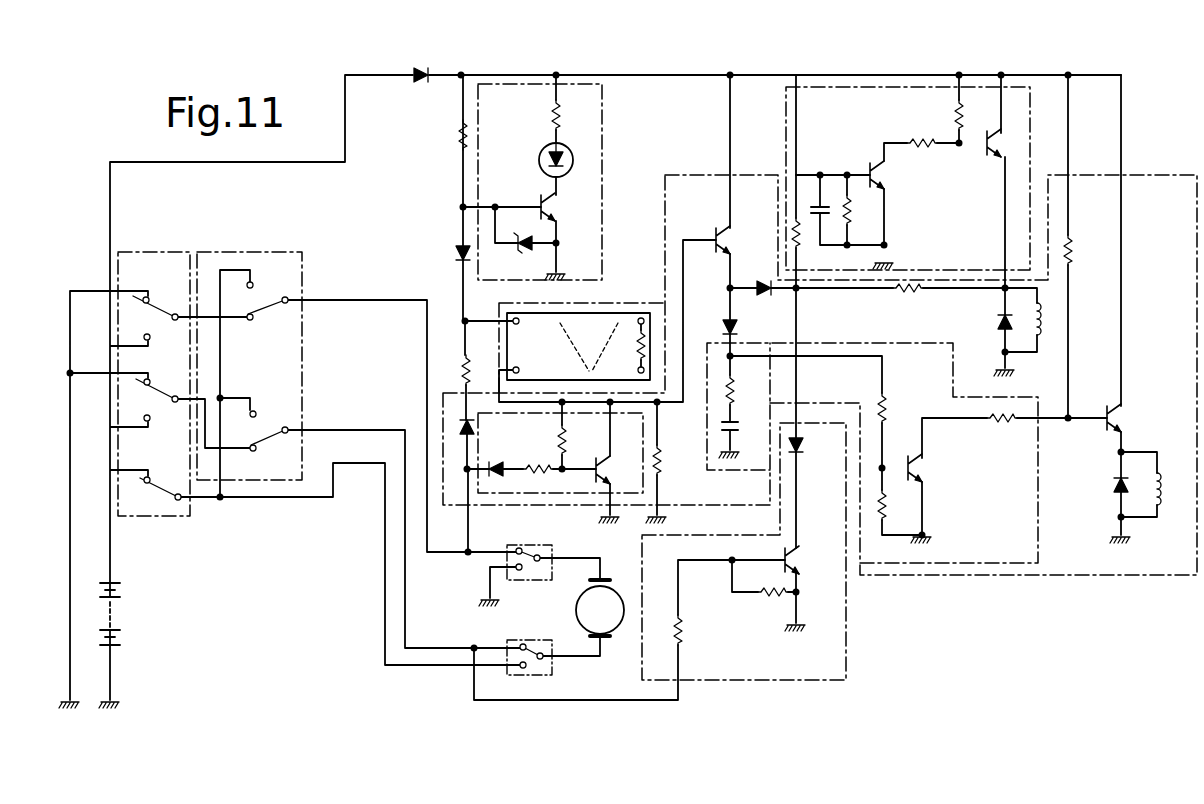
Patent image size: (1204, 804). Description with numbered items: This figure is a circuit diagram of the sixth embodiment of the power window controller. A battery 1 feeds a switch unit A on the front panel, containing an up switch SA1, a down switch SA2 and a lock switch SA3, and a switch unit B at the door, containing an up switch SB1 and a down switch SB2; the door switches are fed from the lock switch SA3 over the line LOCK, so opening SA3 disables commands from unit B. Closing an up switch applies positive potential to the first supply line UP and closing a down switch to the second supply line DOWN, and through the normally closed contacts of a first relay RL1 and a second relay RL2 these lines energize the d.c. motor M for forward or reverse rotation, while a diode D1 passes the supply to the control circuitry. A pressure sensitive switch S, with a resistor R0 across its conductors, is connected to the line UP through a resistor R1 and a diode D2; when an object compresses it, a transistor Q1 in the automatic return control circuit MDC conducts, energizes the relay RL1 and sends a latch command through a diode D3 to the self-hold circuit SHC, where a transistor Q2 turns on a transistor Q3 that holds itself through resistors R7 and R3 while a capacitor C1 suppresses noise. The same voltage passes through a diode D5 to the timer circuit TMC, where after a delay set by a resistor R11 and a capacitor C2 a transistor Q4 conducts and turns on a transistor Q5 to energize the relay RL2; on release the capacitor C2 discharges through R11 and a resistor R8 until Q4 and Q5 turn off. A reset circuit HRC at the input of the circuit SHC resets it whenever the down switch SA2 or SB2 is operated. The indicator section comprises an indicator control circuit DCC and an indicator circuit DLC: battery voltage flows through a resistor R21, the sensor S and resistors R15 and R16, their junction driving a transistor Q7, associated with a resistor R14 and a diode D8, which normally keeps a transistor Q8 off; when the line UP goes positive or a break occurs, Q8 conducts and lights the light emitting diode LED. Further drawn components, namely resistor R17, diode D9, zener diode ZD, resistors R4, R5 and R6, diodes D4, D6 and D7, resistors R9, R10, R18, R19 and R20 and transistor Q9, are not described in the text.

The battery 1 is at (124, 598).
The switch unit A is at (178, 252).
The switch unit B is at (290, 252).
The up switch SA1 is at (120, 333).
The down switch SA2 is at (144, 411).
The lock switch SA3 is at (165, 500).
The up switch SB1 is at (273, 318).
The down switch SB2 is at (275, 466).
The first supply line UP is at (329, 290).
The second supply line DOWN is at (338, 419).
The positive potential line LOCK is at (335, 507).
The diode D1 is at (426, 86).
The resistor R21 is at (444, 136).
The diode D9 is at (479, 261).
The indicator circuit DLC is at (603, 106).
The resistor R17 is at (575, 115).
The light emitting diode LED is at (576, 160).
The transistor Q8 is at (565, 209).
The zener diode ZD is at (528, 254).
The automatic return control circuit MDC is at (664, 194).
The self-hold circuit SHC is at (790, 106).
The pressure sensitive switch S is at (628, 302).
The resistor R0 is at (648, 350).
The resistor R1 is at (481, 370).
The diode D2 is at (453, 428).
The indicator control circuit DCC is at (563, 493).
The diode D8 is at (493, 458).
The resistor R16 is at (536, 457).
The resistor R15 is at (580, 440).
The transistor Q7 is at (618, 473).
The resistor R14 is at (677, 460).
The transistor Q1 is at (742, 240).
The diode D3 is at (764, 276).
The diode D5 is at (746, 330).
The resistor R11 is at (751, 390).
The capacitor C2 is at (745, 432).
The diode D4 is at (812, 447).
The resistor R3 is at (785, 233).
The capacitor C1 is at (828, 223).
The resistor R4 is at (859, 217).
The transistor Q2 is at (892, 175).
The resistor R5 is at (923, 155).
The resistor R6 is at (973, 115).
The transistor Q3 is at (1009, 143).
The resistor R7 is at (908, 302).
The diode D6 is at (986, 325).
The first relay RL1 is at (786, 455).
The resistor R10 is at (1087, 252).
The transistor Q5 is at (1129, 418).
The diode D7 is at (1104, 488).
The second relay RL2 is at (849, 587).
The resistor R9 is at (1002, 431).
The transistor Q4 is at (931, 470).
The resistor R18 is at (901, 408).
The resistor R8 is at (868, 505).
The timer circuit TMC is at (1040, 549).
The reset circuit HRC is at (848, 676).
The transistor Q9 is at (807, 561).
The resistor R19 is at (775, 607).
The resistor R20 is at (697, 630).
The d.c. motor M is at (600, 608).